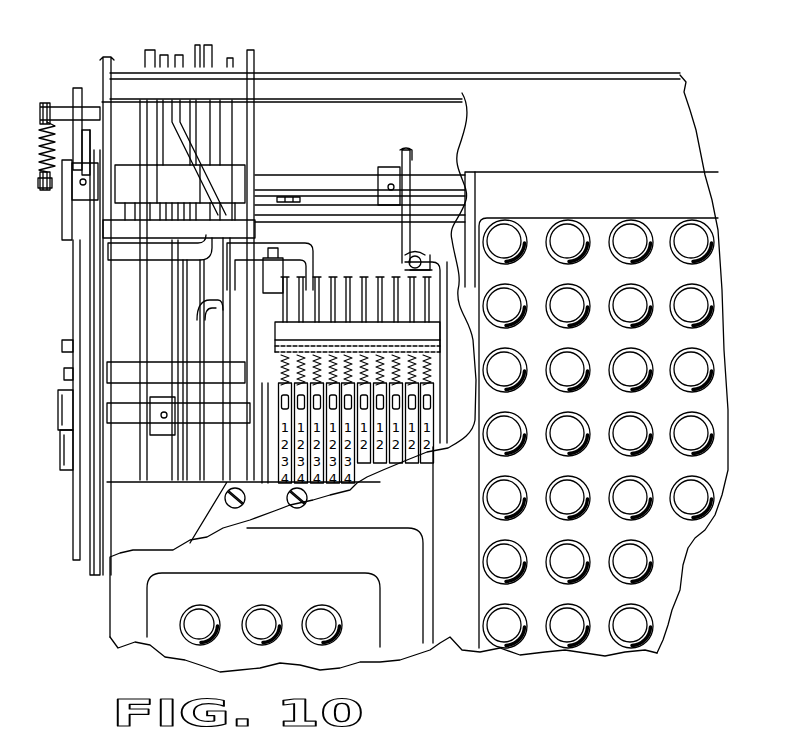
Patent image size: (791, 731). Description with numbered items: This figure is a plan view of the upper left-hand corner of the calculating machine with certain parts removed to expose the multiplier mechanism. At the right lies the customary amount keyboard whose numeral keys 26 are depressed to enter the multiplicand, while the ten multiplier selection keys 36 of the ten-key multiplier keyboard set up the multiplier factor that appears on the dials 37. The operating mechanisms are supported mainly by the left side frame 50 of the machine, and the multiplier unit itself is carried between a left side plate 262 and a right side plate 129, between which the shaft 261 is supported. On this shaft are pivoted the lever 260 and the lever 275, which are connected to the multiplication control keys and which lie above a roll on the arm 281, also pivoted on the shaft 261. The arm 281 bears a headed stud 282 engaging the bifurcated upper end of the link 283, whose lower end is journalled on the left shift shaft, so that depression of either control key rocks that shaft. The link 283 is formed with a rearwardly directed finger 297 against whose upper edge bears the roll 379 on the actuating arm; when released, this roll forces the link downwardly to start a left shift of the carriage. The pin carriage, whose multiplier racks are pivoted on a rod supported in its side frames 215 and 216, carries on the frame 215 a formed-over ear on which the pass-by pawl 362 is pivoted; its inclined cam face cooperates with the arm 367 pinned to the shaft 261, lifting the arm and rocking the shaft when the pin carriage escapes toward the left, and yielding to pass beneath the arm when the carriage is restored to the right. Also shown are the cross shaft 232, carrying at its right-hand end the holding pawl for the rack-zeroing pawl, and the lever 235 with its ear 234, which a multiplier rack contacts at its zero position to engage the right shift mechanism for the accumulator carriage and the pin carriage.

The numeral keys 26 is at (627, 225).
The multiplier selection keys 36 is at (318, 606).
The dials 37 is at (375, 450).
The left side frame 50 is at (254, 128).
The right side plate 129 is at (476, 178).
The right side frame of the pin carriage 215 is at (445, 357).
The side frame of the pin carriage 216 is at (270, 468).
The cross shaft 232 is at (197, 418).
The ear 234 is at (278, 272).
The lever 235 is at (178, 55).
The lever 260 is at (197, 42).
The shaft 261 is at (277, 178).
The left side plate 262 is at (102, 58).
The lever 275 is at (210, 45).
The arm 281 is at (73, 512).
The headed stud 282 is at (62, 450).
The link 283 is at (62, 417).
The finger 297 is at (70, 362).
The pass-by pawl 362 is at (410, 268).
The arm 367 is at (408, 170).
The roll 379 is at (66, 373).